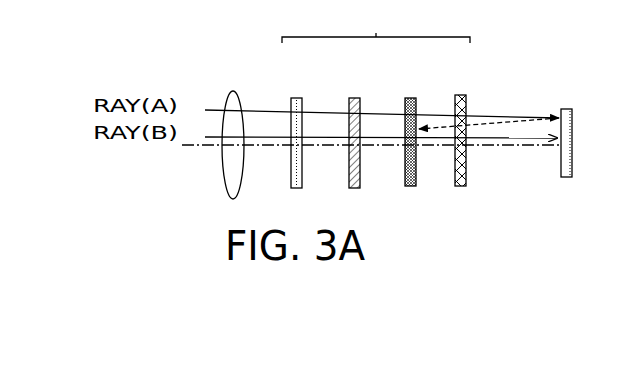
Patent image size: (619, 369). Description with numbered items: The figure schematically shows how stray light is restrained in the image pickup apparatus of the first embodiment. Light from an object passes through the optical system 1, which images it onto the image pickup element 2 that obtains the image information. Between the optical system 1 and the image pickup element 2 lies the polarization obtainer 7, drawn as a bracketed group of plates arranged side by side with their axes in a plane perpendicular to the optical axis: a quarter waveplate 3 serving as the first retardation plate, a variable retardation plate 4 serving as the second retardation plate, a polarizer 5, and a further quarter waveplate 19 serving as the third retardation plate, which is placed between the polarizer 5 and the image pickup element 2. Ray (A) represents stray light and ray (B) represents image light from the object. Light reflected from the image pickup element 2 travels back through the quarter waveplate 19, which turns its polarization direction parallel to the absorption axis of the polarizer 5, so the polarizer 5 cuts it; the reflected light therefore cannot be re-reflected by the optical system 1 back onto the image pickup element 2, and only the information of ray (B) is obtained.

The optical system 1 is at (236, 99).
The image pickup element 2 is at (568, 112).
The quarter waveplate (first retardation plate) 3 is at (297, 102).
The variable retardation plate (second retardation plate) 4 is at (355, 103).
The polarizer 5 is at (413, 102).
The quarter waveplate (third retardation plate) 19 is at (463, 98).
The polarization obtainer 7 is at (376, 24).